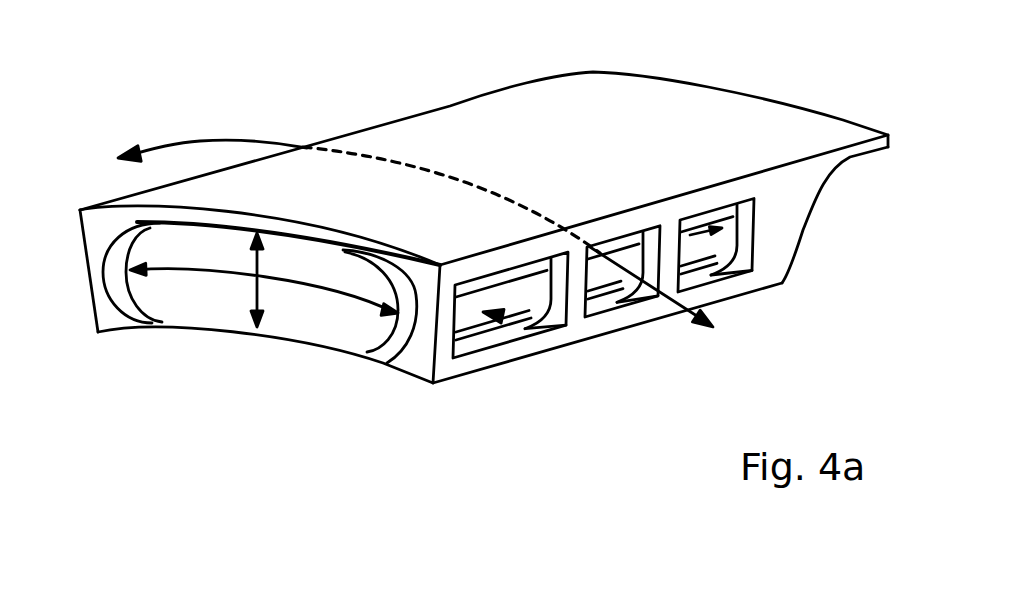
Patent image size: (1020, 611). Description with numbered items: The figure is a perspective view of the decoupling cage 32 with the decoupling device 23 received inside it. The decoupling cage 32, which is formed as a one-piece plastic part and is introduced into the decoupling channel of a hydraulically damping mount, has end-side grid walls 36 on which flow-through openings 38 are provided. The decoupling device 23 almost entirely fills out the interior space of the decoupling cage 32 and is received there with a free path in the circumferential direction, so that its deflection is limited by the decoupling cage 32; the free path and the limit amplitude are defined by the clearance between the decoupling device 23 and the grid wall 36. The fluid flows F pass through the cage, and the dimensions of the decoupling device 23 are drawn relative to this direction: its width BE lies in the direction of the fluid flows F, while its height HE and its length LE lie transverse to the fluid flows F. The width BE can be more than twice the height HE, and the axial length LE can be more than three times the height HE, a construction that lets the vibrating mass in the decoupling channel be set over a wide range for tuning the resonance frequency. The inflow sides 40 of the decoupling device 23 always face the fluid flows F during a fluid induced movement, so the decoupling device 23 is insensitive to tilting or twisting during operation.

The decoupling device 23 is at (217, 310).
The decoupling cage 32 is at (460, 370).
The grid wall 36 is at (773, 250).
The flow-through opening 38 is at (597, 293).
The inflow side 40 is at (487, 312).
The fluid flows F is at (375, 158).
The width of the decoupling device BE is at (197, 265).
The height of the decoupling device HE is at (262, 298).
The length of the decoupling device LE is at (694, 232).